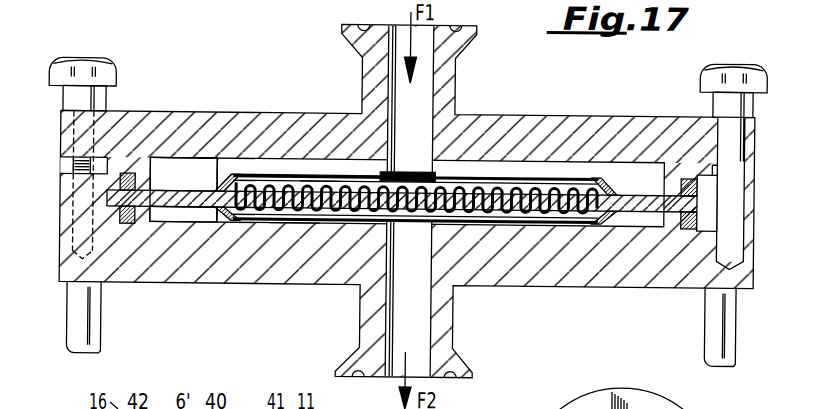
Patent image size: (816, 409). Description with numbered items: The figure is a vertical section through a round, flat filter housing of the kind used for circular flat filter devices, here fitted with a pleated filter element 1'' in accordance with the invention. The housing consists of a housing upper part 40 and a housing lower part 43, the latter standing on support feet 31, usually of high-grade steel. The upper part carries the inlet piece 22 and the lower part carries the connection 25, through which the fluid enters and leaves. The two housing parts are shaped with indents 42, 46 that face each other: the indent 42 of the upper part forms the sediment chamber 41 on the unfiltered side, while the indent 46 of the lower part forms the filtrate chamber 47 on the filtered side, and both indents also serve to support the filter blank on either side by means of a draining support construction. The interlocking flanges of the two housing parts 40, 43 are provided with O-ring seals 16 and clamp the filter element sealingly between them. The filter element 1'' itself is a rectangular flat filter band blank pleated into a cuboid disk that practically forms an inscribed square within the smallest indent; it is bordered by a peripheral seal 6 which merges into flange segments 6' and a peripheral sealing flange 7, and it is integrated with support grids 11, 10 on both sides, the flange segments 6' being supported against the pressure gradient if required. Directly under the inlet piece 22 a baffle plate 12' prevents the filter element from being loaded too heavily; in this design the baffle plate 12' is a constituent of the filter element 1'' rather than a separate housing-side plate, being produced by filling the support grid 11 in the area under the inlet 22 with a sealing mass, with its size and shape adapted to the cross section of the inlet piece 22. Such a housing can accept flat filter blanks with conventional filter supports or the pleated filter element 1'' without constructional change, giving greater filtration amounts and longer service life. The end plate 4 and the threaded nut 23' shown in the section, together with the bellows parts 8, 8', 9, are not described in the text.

The filter element 1'' is at (307, 123).
The end plate 4 is at (601, 185).
The peripheral seal 6 is at (201, 135).
The flange segments 6' is at (194, 261).
The peripheral sealing flange 7 is at (112, 201).
The bellows 8 is at (417, 148).
The bellows reinforcement sheath 8' is at (425, 134).
The bellows wall 9 is at (431, 153).
The support grid 10 is at (287, 225).
The support grid 11 is at (315, 178).
The baffle plate 12' is at (408, 149).
The O-ring seals 16 is at (127, 176).
The inlet piece 22 is at (449, 80).
The threaded nut 23' is at (409, 205).
The connection 25 is at (446, 316).
The support feet 31 is at (85, 336).
The housing upper part 40 is at (530, 134).
The sediment chamber 41 is at (213, 176).
The indent 42 is at (153, 176).
The housing lower part 43 is at (567, 263).
The indent 46 is at (167, 216).
The filtrate chamber 47 is at (208, 220).